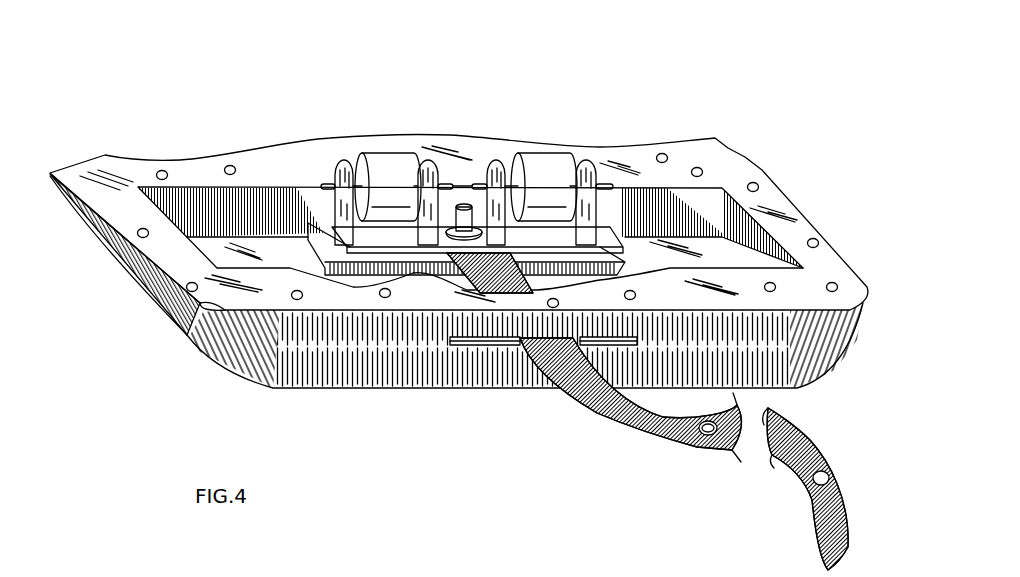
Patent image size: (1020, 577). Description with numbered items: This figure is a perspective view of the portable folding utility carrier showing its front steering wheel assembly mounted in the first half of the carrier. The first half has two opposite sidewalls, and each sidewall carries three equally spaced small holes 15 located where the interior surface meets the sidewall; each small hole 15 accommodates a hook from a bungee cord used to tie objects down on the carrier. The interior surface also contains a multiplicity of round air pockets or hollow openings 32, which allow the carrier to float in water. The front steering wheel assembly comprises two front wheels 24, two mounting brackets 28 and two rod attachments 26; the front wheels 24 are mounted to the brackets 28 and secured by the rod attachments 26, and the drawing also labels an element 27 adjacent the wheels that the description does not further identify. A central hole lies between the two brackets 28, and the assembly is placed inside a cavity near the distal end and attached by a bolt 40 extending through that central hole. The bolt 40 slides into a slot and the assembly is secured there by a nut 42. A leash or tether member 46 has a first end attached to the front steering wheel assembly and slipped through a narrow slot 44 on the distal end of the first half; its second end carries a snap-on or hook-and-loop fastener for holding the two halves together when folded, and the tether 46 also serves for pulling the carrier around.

The small holes 15 is at (728, 148).
The front wheels 24 is at (386, 148).
The rod attachments 26 is at (333, 162).
The shaft 27 is at (337, 185).
The mounting brackets 28 is at (428, 153).
The round air pockets 32 is at (160, 171).
The bolt 40 is at (464, 207).
The nut 42 is at (445, 243).
The narrow slot 44 is at (603, 342).
The leash or tether member 46 is at (585, 397).